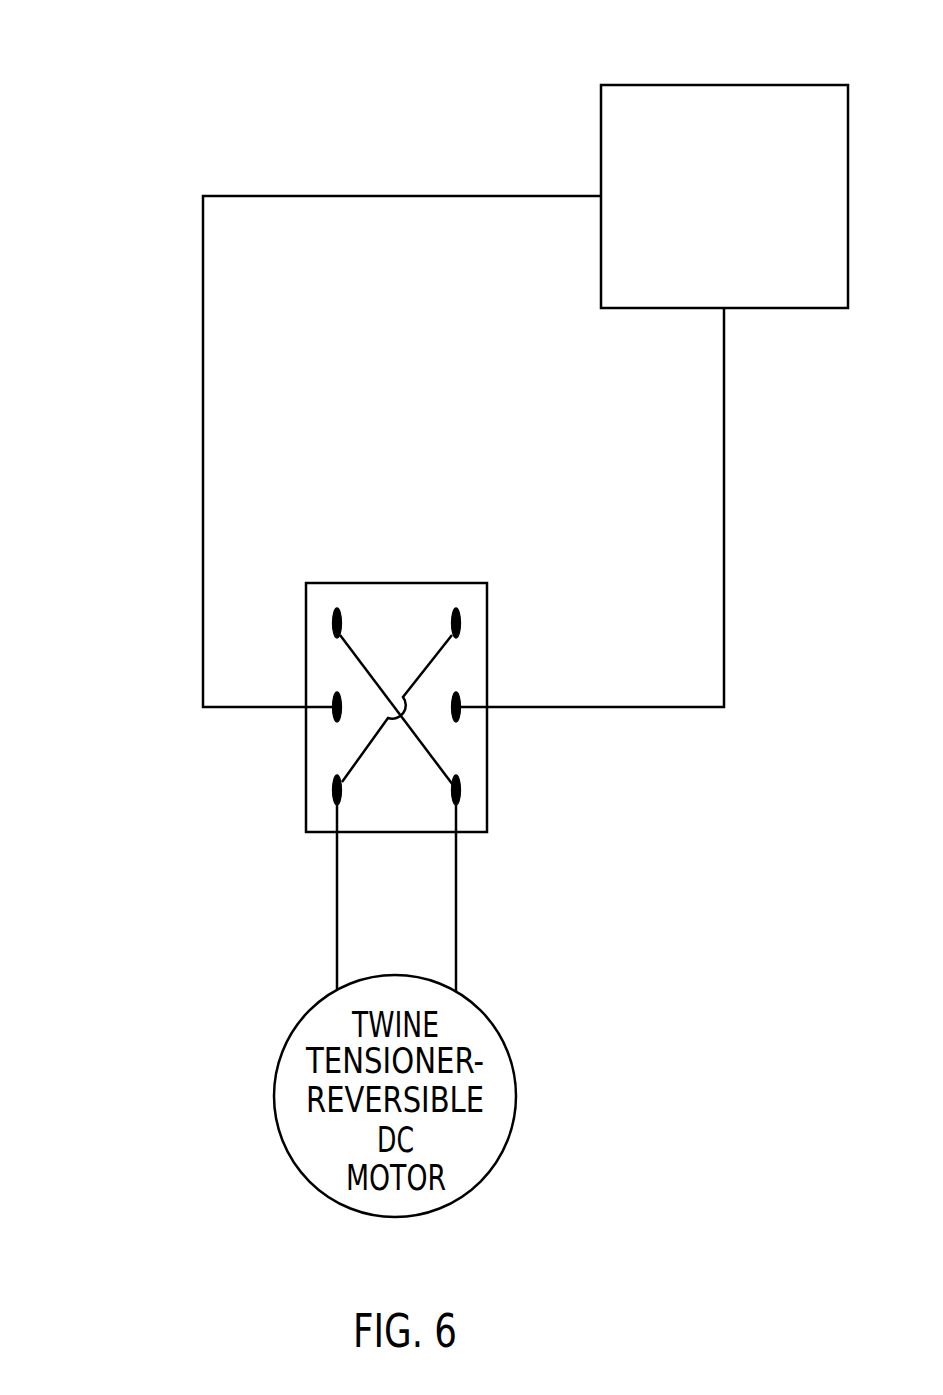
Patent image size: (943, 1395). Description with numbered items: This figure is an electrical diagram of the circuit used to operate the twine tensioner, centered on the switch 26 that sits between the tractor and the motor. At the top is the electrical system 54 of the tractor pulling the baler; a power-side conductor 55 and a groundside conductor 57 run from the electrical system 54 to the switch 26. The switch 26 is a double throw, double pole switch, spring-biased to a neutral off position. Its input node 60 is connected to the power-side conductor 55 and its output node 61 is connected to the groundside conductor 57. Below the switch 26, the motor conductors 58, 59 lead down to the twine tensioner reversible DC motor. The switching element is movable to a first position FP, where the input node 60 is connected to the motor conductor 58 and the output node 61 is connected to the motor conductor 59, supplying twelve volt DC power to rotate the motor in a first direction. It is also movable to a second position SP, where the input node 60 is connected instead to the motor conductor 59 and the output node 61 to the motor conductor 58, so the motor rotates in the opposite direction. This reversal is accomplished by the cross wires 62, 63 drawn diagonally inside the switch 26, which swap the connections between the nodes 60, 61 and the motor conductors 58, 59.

The electrical system 54 is at (657, 84).
The groundside conductor 57 is at (469, 195).
The power-side conductor 55 is at (724, 452).
The switch 26 is at (297, 705).
The second position SP is at (306, 625).
The first position FP is at (320, 807).
The output node 61 is at (336, 723).
The input node 60 is at (456, 723).
The cross wire 63 is at (360, 652).
The cross wire 62 is at (435, 652).
The motor conductor 59 is at (337, 925).
The motor conductor 58 is at (457, 926).